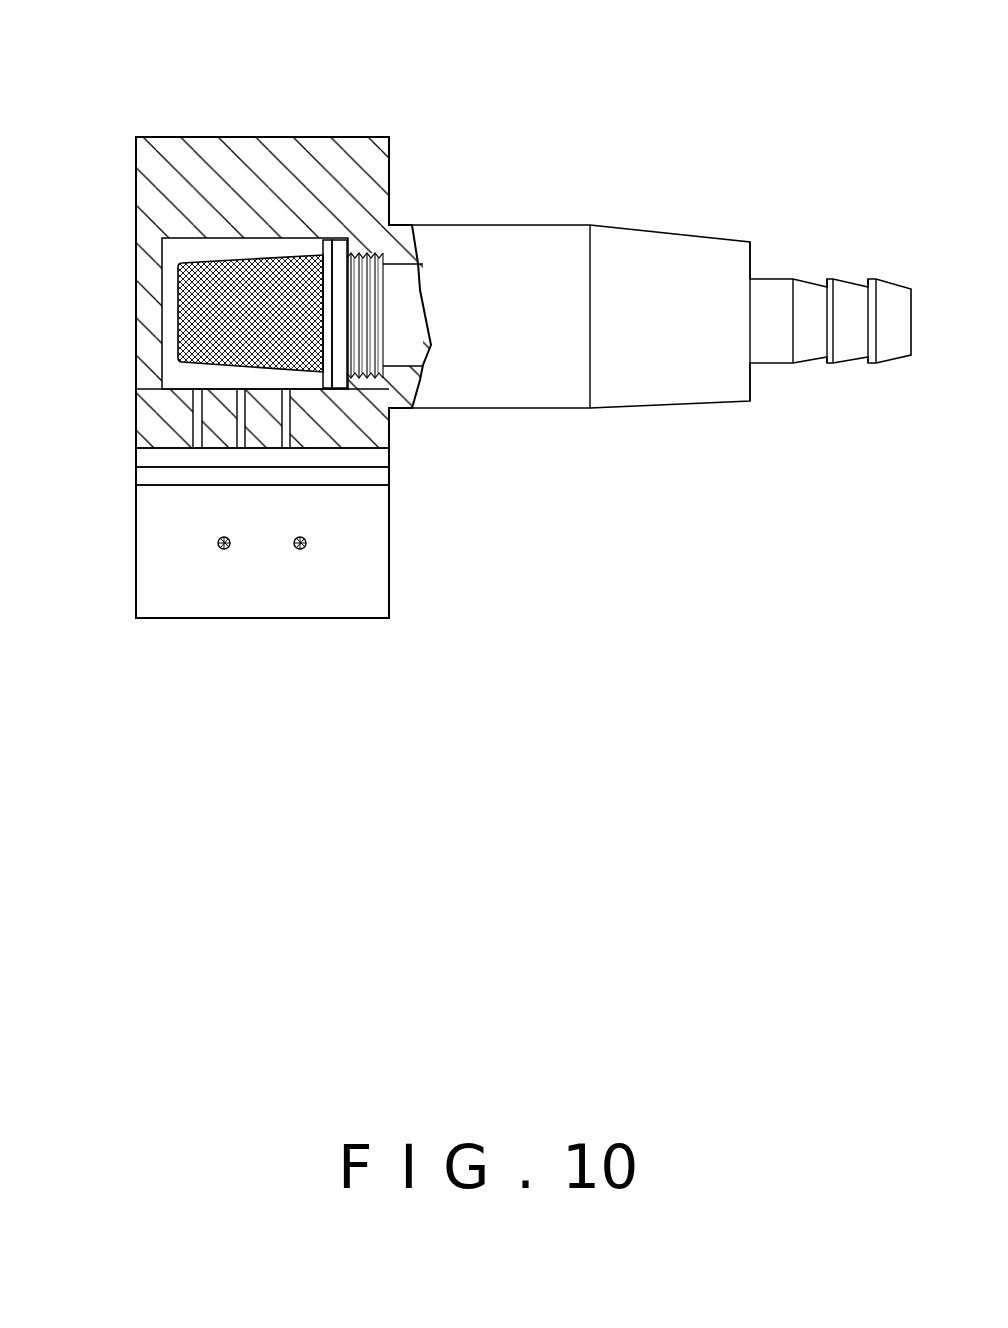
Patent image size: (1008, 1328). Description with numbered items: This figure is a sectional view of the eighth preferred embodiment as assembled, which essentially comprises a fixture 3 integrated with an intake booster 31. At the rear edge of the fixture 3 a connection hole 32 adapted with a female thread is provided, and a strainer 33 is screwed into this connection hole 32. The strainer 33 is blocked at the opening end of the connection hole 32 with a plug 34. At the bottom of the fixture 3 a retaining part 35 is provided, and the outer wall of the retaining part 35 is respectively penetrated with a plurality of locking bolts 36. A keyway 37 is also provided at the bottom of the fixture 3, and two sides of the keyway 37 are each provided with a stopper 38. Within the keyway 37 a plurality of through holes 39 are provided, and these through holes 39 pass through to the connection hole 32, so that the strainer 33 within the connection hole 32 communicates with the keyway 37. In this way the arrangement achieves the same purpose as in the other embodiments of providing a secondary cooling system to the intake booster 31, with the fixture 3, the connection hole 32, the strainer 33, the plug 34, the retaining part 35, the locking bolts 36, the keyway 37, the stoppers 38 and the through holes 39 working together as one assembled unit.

The fixture 3 is at (367, 137).
The intake booster 31 is at (488, 297).
The connection hole 32 is at (183, 260).
The strainer 33 is at (252, 305).
The plug 34 is at (152, 318).
The retaining part 35 is at (377, 570).
The locking bolts 36 is at (300, 548).
The keyway 37 is at (262, 460).
The stopper 38 is at (368, 481).
The through holes 39 is at (243, 412).